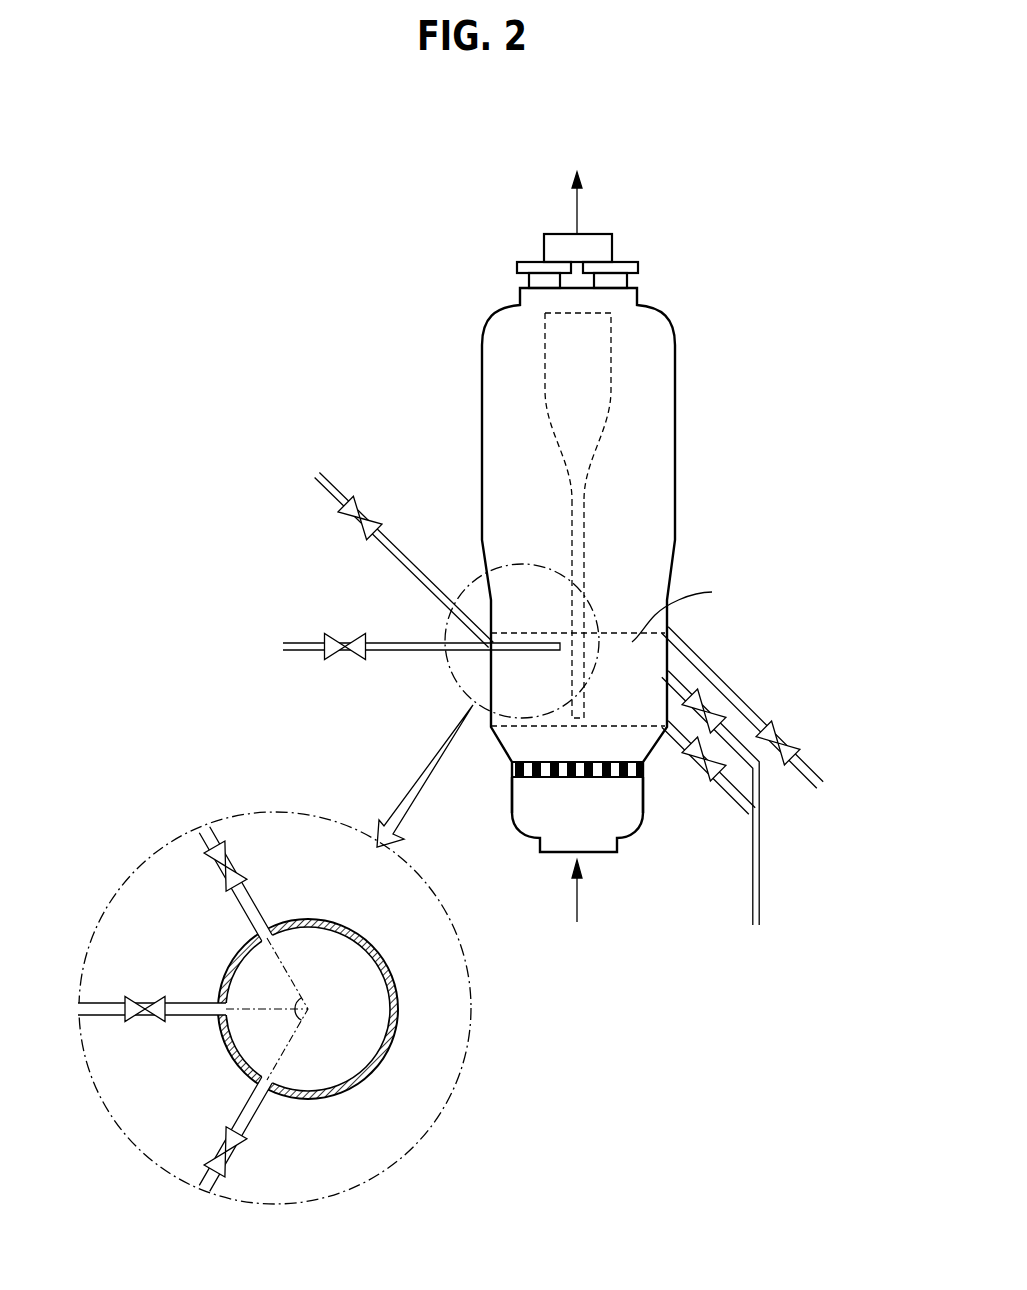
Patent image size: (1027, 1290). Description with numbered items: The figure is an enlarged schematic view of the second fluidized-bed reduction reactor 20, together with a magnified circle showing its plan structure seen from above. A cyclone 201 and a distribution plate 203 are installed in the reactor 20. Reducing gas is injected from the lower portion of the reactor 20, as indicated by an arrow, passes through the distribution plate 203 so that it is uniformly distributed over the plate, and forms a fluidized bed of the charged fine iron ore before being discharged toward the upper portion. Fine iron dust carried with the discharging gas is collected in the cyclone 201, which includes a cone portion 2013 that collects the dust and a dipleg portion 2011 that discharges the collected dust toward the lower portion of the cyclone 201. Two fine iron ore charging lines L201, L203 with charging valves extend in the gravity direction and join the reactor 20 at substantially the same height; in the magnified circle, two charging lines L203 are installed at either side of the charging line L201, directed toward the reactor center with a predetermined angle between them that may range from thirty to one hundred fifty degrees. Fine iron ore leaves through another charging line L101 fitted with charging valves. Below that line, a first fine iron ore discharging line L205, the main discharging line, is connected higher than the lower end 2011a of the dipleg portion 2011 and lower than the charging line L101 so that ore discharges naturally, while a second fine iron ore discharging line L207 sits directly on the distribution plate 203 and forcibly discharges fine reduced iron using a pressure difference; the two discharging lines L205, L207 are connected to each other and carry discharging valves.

The second fluidized-bed reduction reactor 20 is at (470, 129).
The cyclone 201 is at (765, 363).
The cone portion 2013 is at (612, 368).
The dipleg portion 2011 is at (585, 525).
The lower end of the dipleg portion 2011a is at (578, 720).
The distribution plate 203 is at (625, 777).
The fine iron ore charging line L101 is at (712, 667).
The fine iron ore charging line L201 is at (398, 551).
The fine iron ore charging line L203 is at (396, 651).
The first fine iron ore discharging line L205 is at (750, 708).
The second fine iron ore discharging line L207 is at (728, 783).